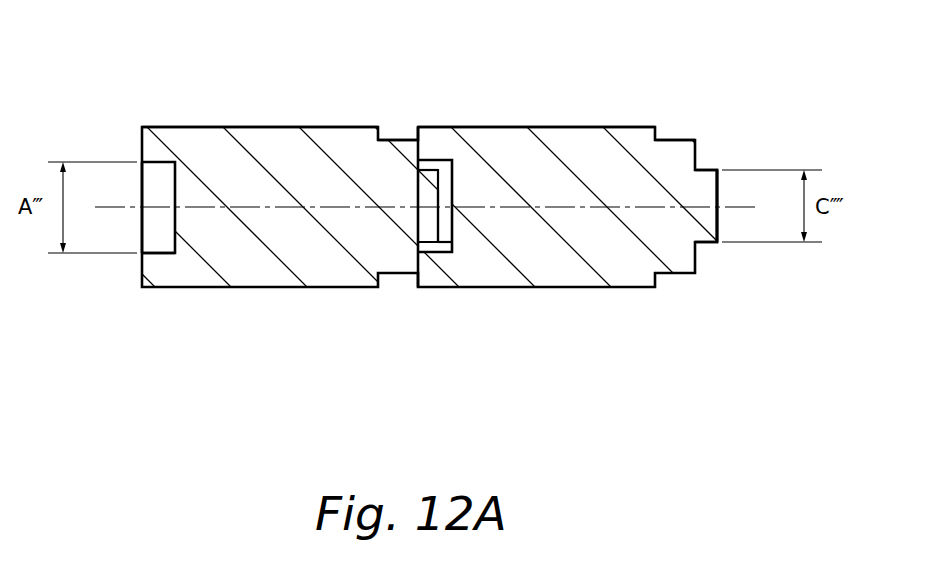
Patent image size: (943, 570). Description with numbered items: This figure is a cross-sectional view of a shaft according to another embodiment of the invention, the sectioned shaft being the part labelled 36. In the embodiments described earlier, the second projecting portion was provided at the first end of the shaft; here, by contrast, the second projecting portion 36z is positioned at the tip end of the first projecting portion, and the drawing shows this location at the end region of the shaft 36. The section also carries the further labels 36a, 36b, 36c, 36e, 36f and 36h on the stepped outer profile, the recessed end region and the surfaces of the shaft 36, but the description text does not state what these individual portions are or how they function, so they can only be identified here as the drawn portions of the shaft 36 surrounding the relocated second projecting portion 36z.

The pin / coupling member 36 is at (276, 89).
The large-diameter cylindrical portion 36a is at (336, 127).
The reduced-diameter step portion 36b is at (403, 127).
The bottom wall of recess 36c is at (152, 240).
The recess 36e is at (142, 222).
The end face 36f is at (717, 223).
The inner opening 36h is at (175, 189).
The second projecting portion 36z is at (428, 219).